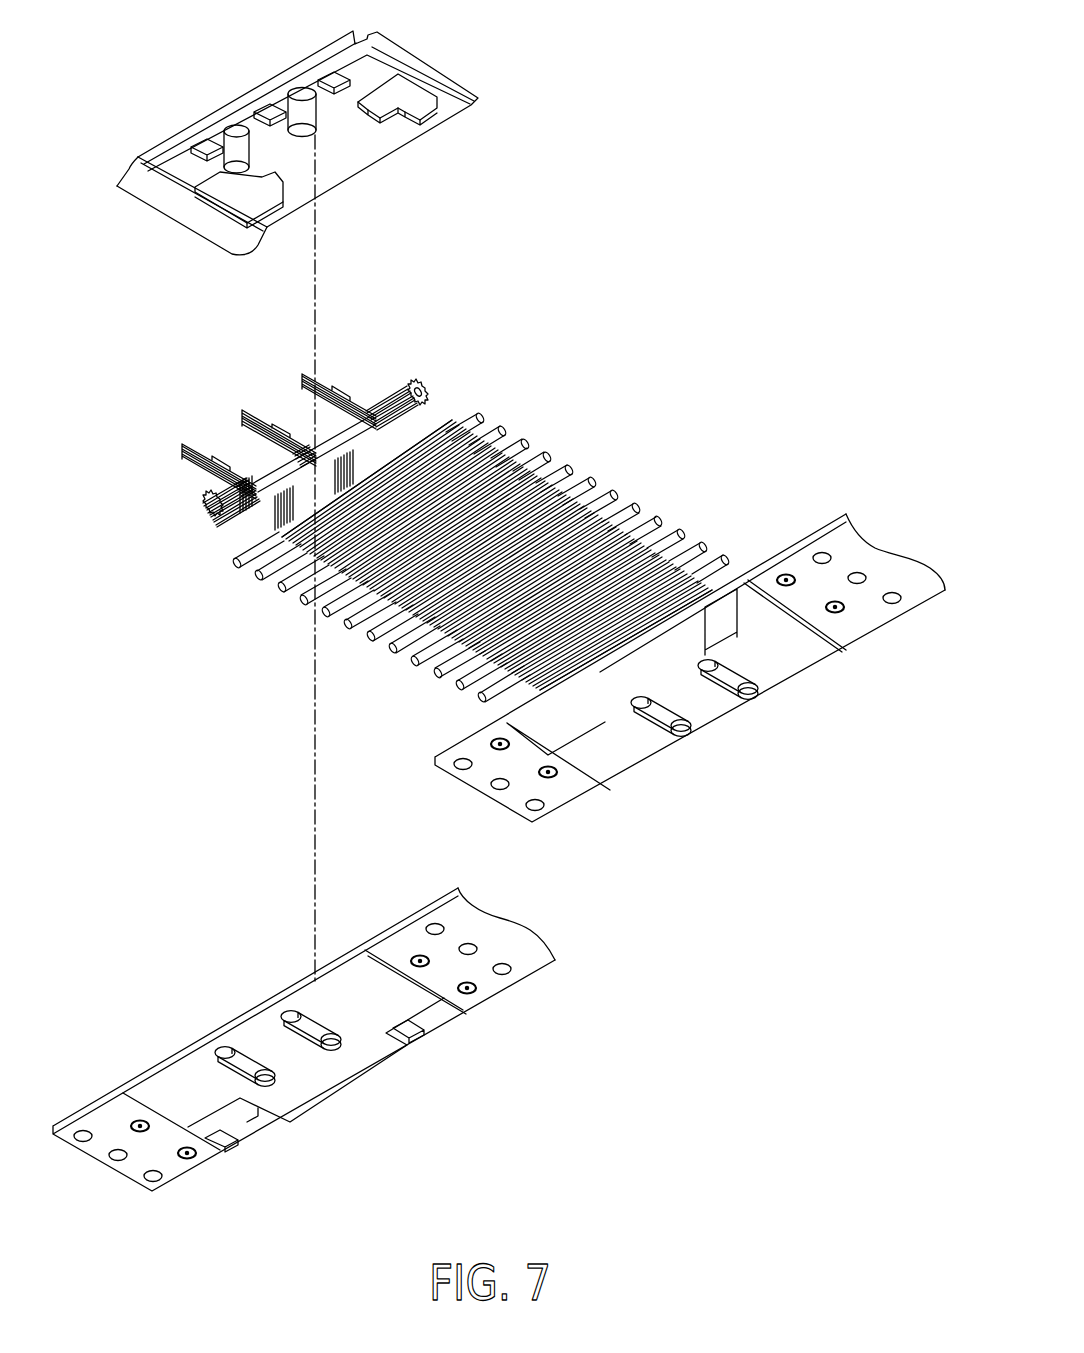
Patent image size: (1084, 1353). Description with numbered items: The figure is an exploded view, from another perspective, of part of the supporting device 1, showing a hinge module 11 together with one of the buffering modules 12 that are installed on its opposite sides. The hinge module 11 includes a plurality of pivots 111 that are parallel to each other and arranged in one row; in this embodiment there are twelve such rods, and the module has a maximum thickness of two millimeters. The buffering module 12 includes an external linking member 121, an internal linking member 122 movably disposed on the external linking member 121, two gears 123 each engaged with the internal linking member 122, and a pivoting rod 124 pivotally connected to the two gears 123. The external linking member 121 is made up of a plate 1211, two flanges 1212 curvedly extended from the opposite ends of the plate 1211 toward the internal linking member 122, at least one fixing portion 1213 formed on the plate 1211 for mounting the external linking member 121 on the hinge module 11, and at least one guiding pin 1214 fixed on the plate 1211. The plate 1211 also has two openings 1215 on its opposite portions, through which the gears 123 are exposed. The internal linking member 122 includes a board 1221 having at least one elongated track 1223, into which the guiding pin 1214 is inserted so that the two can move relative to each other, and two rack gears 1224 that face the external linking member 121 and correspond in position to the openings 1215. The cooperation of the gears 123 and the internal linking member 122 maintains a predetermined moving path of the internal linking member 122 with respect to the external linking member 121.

The supporting device 1 is at (926, 62).
The hinge module 11 is at (412, 681).
The pivots 111 is at (637, 512).
The buffering module 12 is at (722, 723).
The external linking member 121 is at (437, 140).
The plate 1211 is at (178, 132).
The flanges 1212 is at (165, 212).
The fixing portion 1213 is at (267, 122).
The guiding pin 1214 is at (300, 100).
The openings 1215 is at (405, 105).
The internal linking member 122 is at (272, 996).
The board 1221 is at (166, 1070).
The elongated track 1223 is at (318, 1045).
The rack gears 1224 is at (421, 1024).
The gears 123 is at (428, 382).
The pivoting rod 124 is at (343, 437).